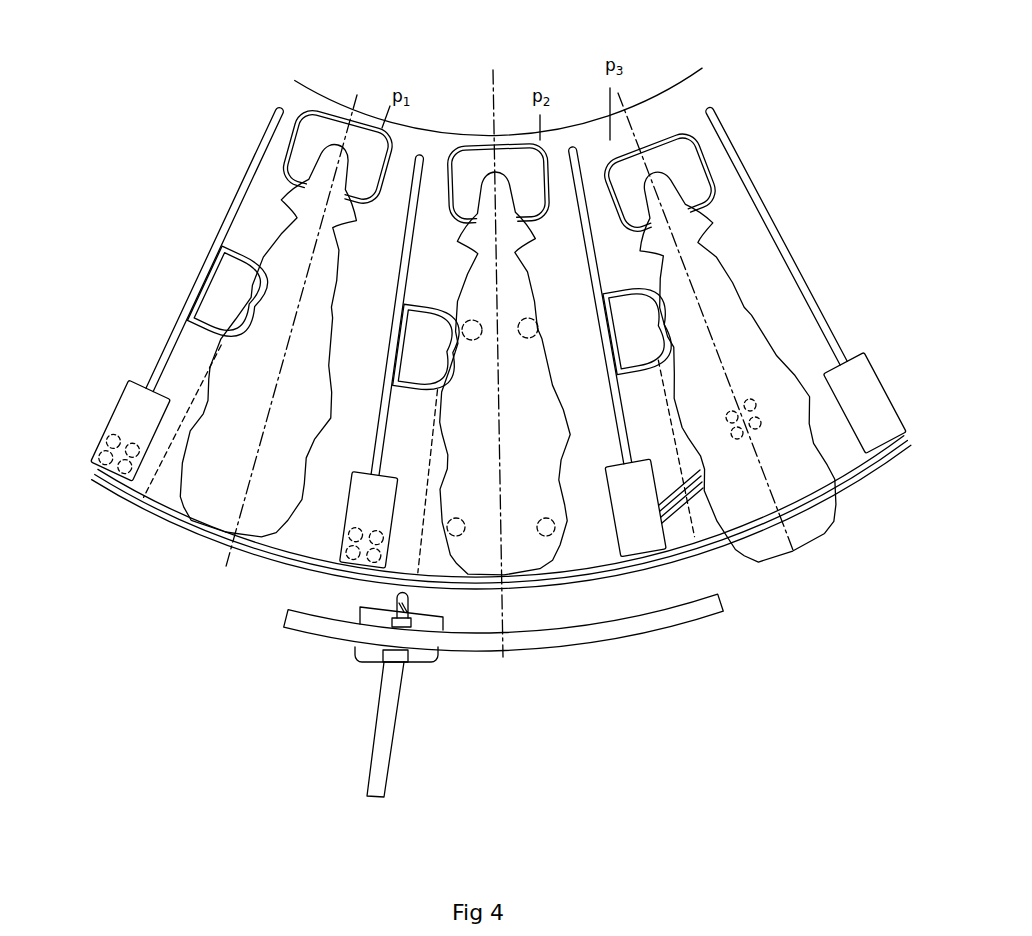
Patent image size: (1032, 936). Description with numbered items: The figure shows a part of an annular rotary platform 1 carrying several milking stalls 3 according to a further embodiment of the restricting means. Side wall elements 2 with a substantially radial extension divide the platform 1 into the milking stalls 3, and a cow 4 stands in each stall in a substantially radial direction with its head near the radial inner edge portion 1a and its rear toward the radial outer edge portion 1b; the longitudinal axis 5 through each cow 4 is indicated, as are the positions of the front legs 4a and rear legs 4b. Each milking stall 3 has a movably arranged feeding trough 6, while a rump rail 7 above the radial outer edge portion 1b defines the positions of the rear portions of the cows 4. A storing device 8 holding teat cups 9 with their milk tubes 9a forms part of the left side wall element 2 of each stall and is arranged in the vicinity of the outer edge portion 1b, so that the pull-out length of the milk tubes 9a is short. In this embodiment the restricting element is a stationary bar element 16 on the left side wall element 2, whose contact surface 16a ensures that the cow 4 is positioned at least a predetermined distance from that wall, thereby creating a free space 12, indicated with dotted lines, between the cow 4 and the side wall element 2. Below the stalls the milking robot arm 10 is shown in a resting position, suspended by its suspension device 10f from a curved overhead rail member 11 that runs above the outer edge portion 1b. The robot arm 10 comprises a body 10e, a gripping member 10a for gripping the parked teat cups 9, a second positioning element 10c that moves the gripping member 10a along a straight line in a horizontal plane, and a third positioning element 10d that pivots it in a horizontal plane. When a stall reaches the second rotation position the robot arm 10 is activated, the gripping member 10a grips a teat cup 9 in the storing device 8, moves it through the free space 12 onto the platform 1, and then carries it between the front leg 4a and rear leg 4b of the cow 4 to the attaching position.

The rotary platform 1 is at (588, 138).
The radial inner edge portion 1a is at (655, 98).
The radial outer edge portion 1b is at (833, 500).
The side wall element 2 is at (247, 182).
The milking stall 3 is at (260, 217).
The cow 4 is at (318, 273).
The front legs 4a is at (528, 327).
The rear legs 4b is at (545, 527).
The longitudinal axis 5 is at (505, 453).
The feeding trough 6 is at (308, 147).
The rump rail 7 is at (195, 532).
The storing device 8 is at (158, 363).
The teat cups 9 is at (102, 438).
The milk tubes 9a is at (687, 497).
The milking robot arm 10 is at (372, 692).
The gripping member 10a is at (397, 600).
The second positioning element 10c is at (383, 728).
The third positioning element 10d is at (410, 608).
The body 10e is at (422, 660).
The suspension device 10f is at (393, 652).
The overhead rail member 11 is at (300, 623).
The free space 12 is at (180, 385).
The bar element 16 is at (252, 293).
The contact surface 16a is at (245, 318).